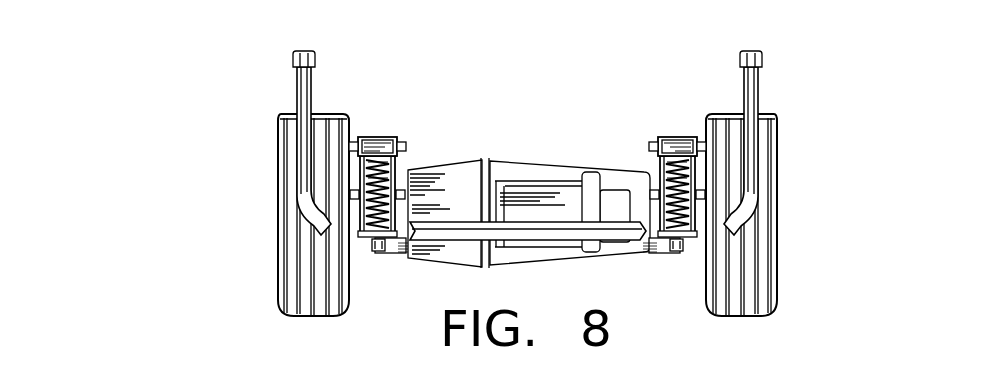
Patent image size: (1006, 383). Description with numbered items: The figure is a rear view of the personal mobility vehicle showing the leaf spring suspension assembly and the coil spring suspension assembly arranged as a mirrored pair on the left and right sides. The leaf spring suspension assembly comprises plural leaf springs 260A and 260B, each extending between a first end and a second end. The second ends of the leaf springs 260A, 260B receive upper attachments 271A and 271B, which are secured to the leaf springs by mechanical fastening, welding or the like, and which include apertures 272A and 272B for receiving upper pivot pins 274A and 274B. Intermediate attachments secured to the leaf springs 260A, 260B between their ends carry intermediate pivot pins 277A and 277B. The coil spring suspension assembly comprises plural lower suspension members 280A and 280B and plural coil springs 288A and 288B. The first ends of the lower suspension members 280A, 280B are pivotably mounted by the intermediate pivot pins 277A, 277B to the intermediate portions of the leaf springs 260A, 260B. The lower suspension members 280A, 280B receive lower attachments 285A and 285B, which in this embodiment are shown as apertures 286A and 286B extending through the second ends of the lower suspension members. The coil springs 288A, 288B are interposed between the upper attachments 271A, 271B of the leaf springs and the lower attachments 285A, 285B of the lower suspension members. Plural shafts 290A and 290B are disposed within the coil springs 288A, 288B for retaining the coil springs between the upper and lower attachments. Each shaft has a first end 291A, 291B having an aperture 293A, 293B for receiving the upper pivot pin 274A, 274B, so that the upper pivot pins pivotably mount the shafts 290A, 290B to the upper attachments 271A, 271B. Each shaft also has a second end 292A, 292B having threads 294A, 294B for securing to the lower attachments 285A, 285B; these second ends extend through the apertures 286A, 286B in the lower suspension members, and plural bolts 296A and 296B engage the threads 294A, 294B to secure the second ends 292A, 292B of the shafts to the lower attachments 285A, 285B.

The leaf spring 260A is at (738, 133).
The leaf spring 260B is at (317, 133).
The upper attachment 271A is at (675, 136).
The upper attachment 271B is at (381, 136).
The aperture 272A is at (681, 136).
The aperture 272B is at (375, 136).
The upper pivot pin 274A is at (651, 147).
The upper pivot pin 274B is at (405, 147).
The intermediate pivot pin 277A is at (632, 169).
The intermediate pivot pin 277B is at (424, 169).
The lower suspension member 280A is at (694, 233).
The lower suspension member 280B is at (362, 233).
The lower attachment 285A is at (682, 242).
The lower attachment 285B is at (374, 242).
The aperture 286A is at (680, 246).
The aperture 286B is at (376, 246).
The coil spring 288A is at (694, 166).
The coil spring 288B is at (362, 166).
The shaft 290A is at (694, 182).
The shaft 290B is at (362, 182).
The first end 291A is at (773, 128).
The first end 291B is at (282, 128).
The second end 292A is at (694, 206).
The second end 292B is at (362, 206).
The aperture 293A is at (668, 138).
The aperture 293B is at (388, 138).
The threads 294A is at (680, 253).
The threads 294B is at (376, 253).
The bolt 296A is at (668, 253).
The bolt 296B is at (388, 253).